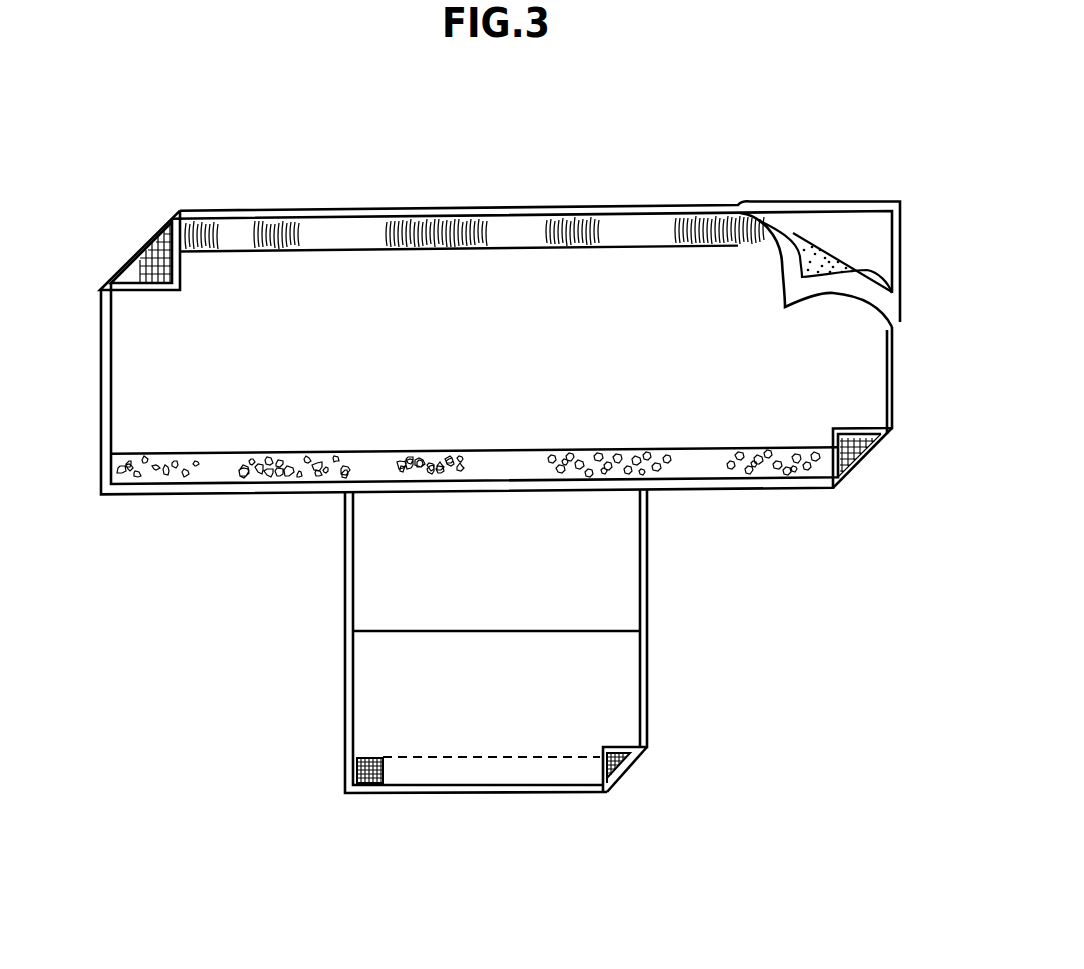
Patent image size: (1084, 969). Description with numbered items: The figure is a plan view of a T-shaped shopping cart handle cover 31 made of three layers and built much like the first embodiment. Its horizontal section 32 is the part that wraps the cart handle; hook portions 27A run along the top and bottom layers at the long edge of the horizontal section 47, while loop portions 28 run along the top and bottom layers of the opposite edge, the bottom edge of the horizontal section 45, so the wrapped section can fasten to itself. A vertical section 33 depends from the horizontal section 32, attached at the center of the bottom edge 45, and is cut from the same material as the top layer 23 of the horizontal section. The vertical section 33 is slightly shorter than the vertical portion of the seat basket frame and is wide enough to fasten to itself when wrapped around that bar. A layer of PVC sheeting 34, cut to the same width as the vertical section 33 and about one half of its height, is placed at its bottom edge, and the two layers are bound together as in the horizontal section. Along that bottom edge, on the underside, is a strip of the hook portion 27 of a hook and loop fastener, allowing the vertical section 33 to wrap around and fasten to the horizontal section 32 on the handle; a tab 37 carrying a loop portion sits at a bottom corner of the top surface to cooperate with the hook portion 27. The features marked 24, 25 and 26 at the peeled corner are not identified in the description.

The T-shaped shopping cart handle cover 31 is at (652, 118).
The hook portions 27A is at (225, 223).
The long edge of the horizontal section 47 is at (492, 195).
The top layer 23 is at (788, 235).
The adhesive layer 24 is at (825, 252).
The corner flap 25 is at (863, 224).
The outer wall 26 is at (908, 258).
The horizontal section 32 is at (175, 370).
The loop portions 28 is at (702, 476).
The bottom edge of the horizontal section 45 is at (283, 511).
The vertical section 33 is at (586, 572).
The layer of PVC sheeting 34 is at (588, 692).
The tab 37 is at (372, 785).
The hook portion 27 is at (538, 772).